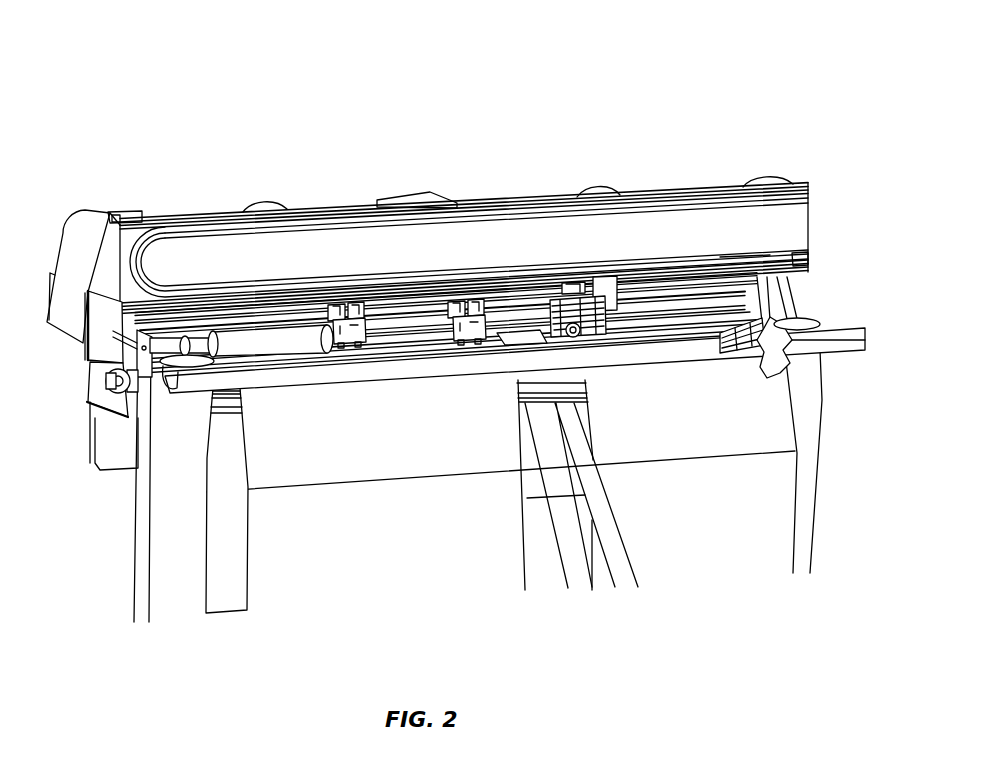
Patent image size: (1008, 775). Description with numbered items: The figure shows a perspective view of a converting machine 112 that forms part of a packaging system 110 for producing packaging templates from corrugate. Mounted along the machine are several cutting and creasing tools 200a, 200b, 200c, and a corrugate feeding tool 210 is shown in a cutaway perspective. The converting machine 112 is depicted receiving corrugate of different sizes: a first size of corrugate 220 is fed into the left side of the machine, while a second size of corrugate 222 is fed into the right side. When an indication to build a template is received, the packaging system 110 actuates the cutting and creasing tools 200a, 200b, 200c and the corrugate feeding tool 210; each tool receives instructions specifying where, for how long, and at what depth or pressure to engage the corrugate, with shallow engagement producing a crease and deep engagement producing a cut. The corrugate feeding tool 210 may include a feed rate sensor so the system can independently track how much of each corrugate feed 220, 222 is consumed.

The packaging system 110 is at (555, 87).
The converting machine 112 is at (778, 208).
The cutting and creasing tool 200a is at (347, 297).
The cutting and creasing tool 200b is at (463, 296).
The cutting and creasing tool 200c is at (607, 290).
The corrugate feeding tool 210 is at (787, 322).
The first size of corrugate 220 is at (278, 582).
The second size of corrugate 222 is at (775, 525).